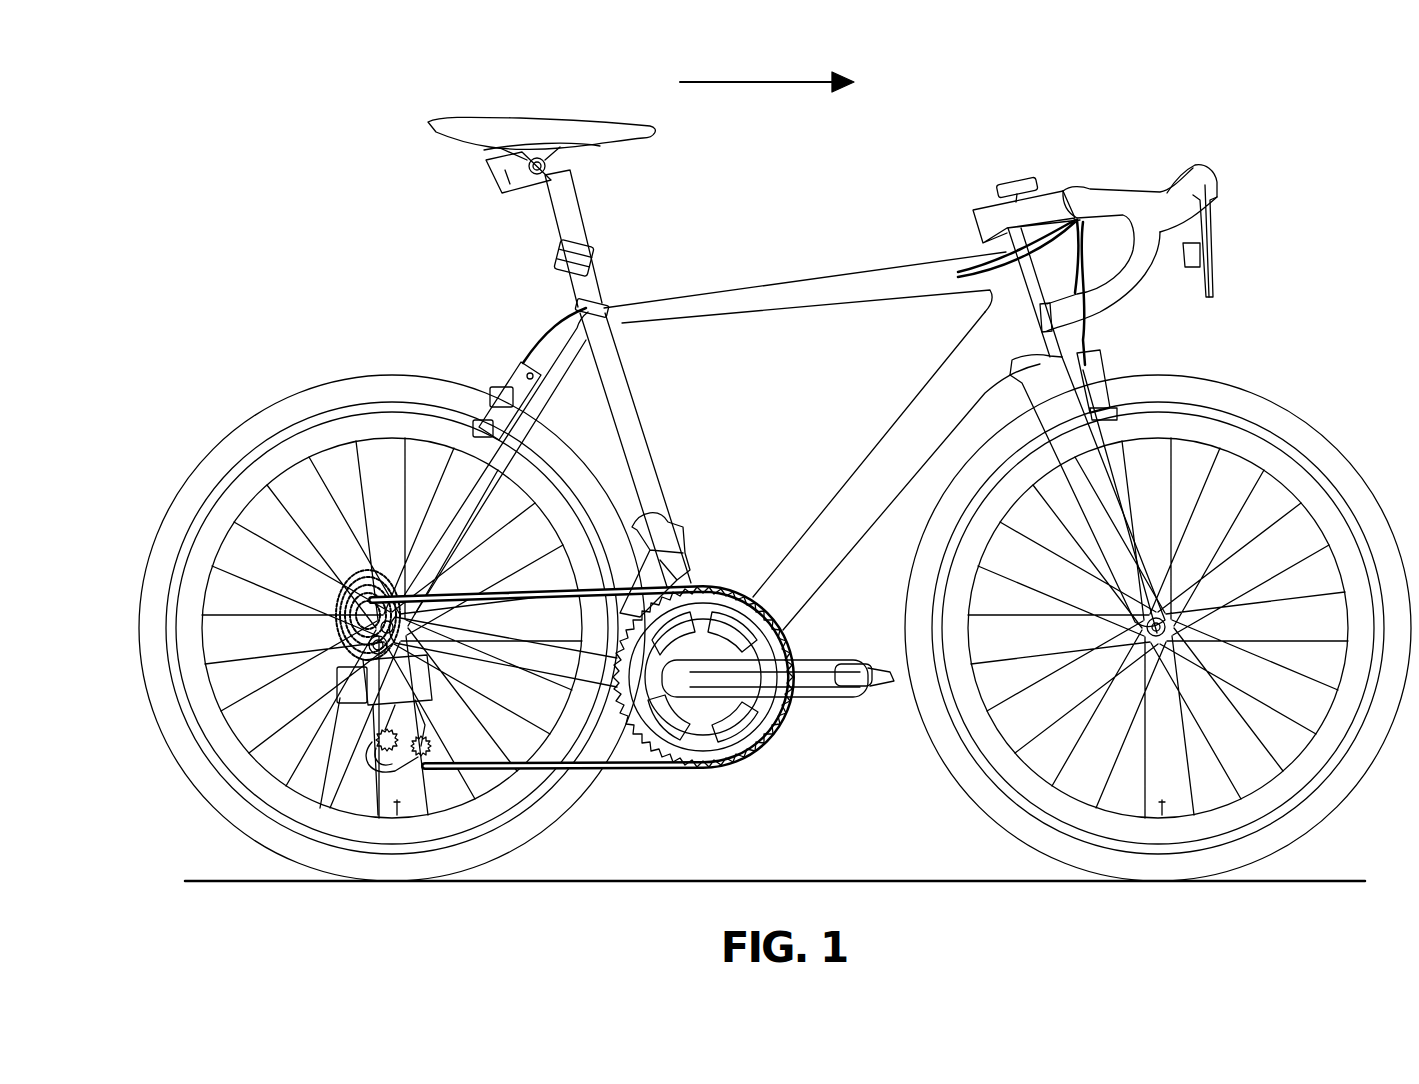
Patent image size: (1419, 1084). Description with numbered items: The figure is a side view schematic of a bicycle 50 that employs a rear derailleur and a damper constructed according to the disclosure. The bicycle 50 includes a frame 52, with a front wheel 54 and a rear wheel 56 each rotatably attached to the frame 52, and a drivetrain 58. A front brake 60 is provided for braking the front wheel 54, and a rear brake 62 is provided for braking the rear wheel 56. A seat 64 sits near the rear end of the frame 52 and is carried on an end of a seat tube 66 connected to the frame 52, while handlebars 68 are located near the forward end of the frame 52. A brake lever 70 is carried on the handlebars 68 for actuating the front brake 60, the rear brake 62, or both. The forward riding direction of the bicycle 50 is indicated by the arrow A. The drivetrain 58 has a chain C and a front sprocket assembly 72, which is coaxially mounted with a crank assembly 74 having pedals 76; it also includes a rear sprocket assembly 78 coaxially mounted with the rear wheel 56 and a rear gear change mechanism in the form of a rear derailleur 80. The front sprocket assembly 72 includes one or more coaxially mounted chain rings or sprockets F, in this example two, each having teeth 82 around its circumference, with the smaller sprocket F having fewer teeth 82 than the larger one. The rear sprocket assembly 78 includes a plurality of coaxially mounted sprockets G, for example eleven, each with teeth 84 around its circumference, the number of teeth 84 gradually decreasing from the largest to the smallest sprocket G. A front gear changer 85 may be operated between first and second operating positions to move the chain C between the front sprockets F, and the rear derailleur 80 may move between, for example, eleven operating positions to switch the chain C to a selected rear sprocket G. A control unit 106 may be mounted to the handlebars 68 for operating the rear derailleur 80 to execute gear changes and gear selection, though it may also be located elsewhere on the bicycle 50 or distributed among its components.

The bicycle 50 is at (932, 166).
The frame 52 is at (820, 287).
The front wheel 54 is at (1320, 407).
The rear wheel 56 is at (238, 400).
The drivetrain 58 is at (778, 755).
The front brake 60 is at (1137, 378).
The rear brake 62 is at (503, 390).
The seat 64 is at (497, 122).
The seat tube 66 is at (552, 204).
The handlebars 68 is at (1103, 213).
The brake lever 70 is at (1207, 247).
The front sprocket assembly 72 is at (650, 770).
The crank assembly 74 is at (832, 714).
The pedals 76 is at (889, 683).
The rear sprocket assembly 78 is at (360, 570).
The rear derailleur 80 is at (360, 722).
The teeth 82 is at (627, 717).
The teeth 84 is at (352, 590).
The front gear changer 85 is at (548, 355).
The control unit 106 is at (1020, 178).
The arrow A is at (767, 96).
The chain C is at (612, 772).
The front sprockets F is at (708, 740).
The rear sprockets G is at (334, 720).